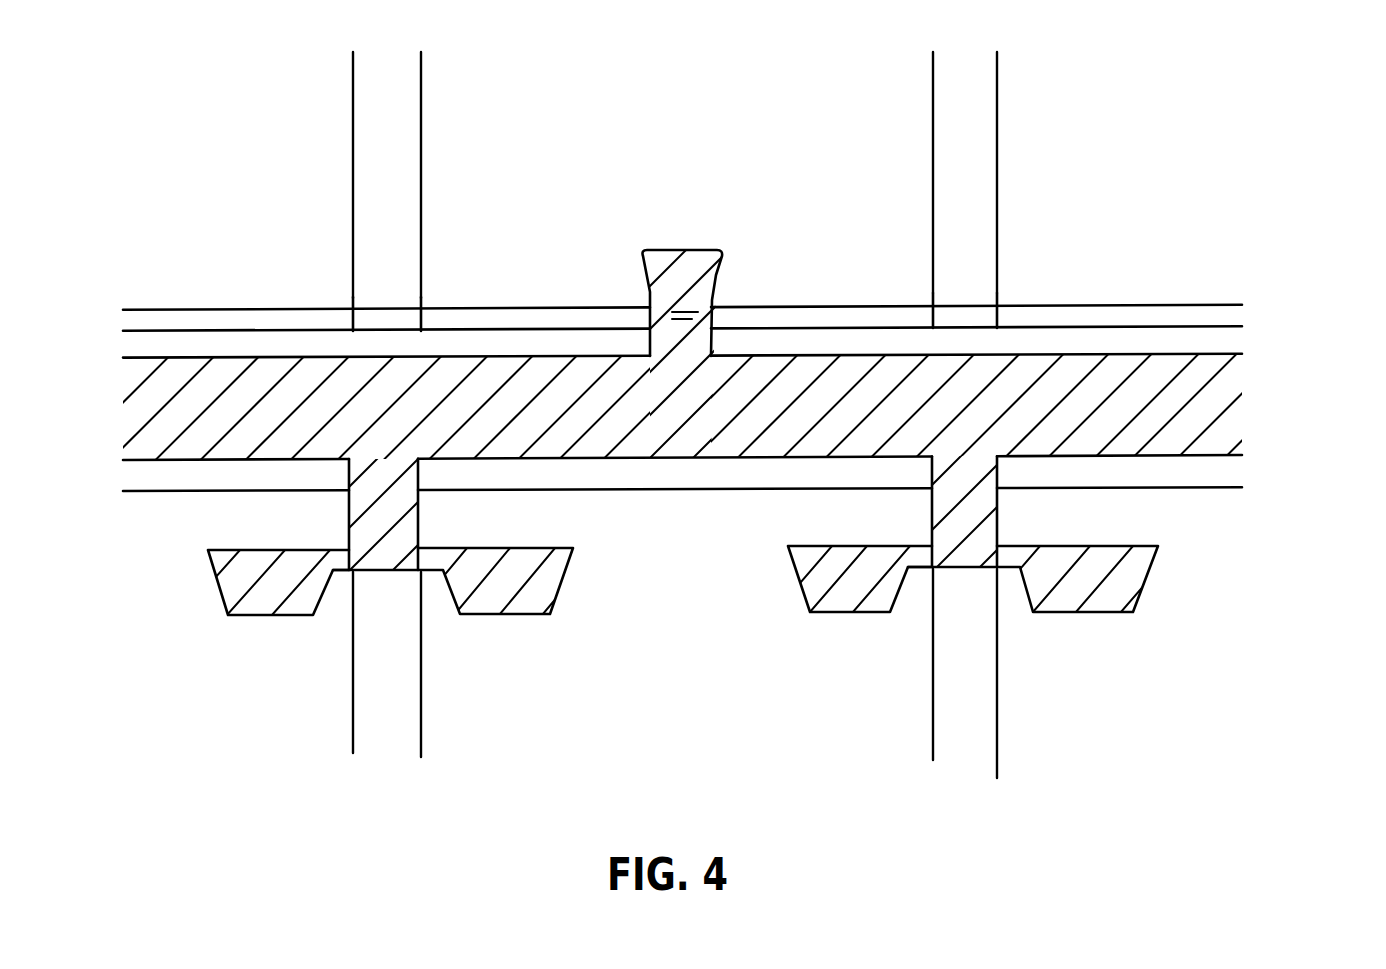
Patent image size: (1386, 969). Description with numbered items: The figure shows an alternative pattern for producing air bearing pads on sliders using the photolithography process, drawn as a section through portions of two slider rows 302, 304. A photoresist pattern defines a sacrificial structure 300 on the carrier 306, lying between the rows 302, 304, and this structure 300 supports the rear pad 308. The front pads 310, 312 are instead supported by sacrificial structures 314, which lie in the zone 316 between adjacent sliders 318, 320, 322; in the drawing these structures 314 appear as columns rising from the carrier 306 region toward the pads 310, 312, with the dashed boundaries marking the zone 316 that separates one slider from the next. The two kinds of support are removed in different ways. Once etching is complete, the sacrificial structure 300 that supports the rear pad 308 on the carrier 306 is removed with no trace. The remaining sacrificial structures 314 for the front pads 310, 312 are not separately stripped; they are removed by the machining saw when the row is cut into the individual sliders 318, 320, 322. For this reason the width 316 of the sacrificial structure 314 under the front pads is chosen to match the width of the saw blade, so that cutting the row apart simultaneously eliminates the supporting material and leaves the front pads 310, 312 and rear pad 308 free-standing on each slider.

The sacrificial structure 300 is at (1228, 392).
The slider row 302 is at (1222, 242).
The slider row 304 is at (1248, 632).
The carrier 306 is at (1225, 477).
The rear pad 308 is at (717, 282).
The front pad 310 is at (560, 590).
The front pad 312 is at (220, 593).
The sacrificial structure 314 is at (349, 518).
The zone 316 is at (387, 745).
The slider 318 is at (235, 200).
The slider 320 is at (693, 185).
The slider 322 is at (1145, 187).